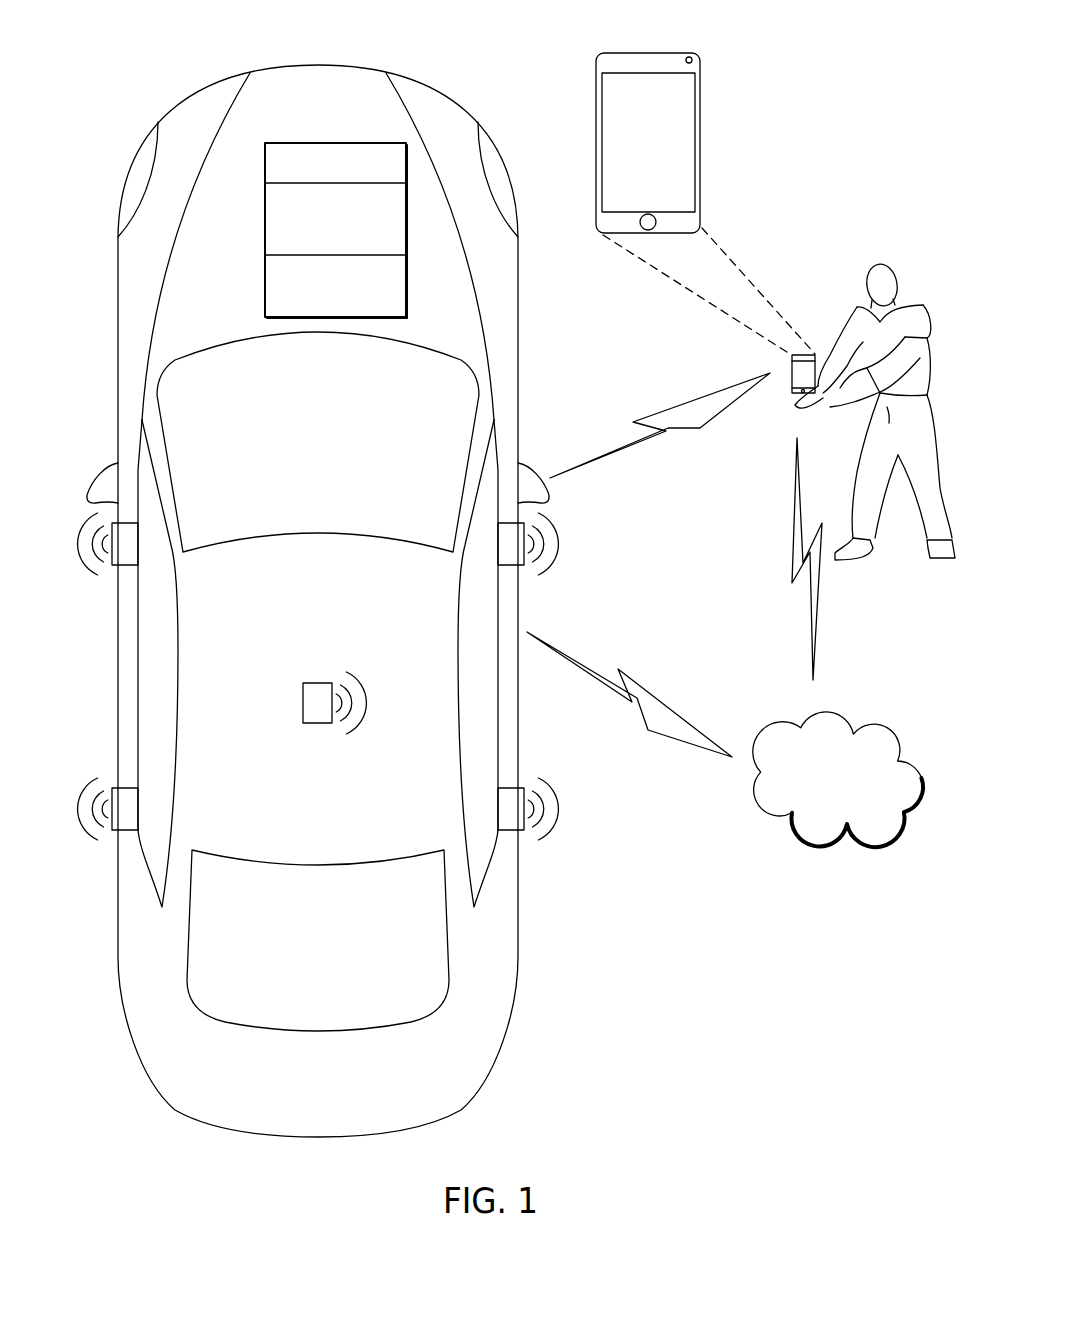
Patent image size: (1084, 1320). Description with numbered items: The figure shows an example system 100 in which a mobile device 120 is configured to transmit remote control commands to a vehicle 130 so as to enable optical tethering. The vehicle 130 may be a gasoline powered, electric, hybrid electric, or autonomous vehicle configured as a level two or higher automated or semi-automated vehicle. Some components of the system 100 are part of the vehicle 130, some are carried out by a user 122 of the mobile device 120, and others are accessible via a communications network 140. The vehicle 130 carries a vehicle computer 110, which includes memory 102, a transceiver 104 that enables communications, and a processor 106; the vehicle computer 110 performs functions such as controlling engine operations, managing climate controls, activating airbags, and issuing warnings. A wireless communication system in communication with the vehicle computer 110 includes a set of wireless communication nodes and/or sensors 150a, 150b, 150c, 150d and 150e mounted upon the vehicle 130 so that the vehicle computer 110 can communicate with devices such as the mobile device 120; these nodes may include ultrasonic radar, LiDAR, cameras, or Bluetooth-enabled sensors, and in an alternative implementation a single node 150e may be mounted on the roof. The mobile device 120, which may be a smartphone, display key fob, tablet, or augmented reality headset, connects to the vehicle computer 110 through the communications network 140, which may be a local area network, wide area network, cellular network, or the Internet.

The system 100 is at (792, 63).
The vehicle 130 is at (150, 72).
The vehicle computer 110 is at (263, 232).
The memory 102 is at (335, 165).
The transceiver 104 is at (335, 225).
The processor 106 is at (336, 294).
The mobile device 120 is at (596, 145).
The user 122 is at (866, 276).
The communications network 140 is at (847, 727).
The wireless communication node 150a is at (110, 566).
The wireless communication node 150b is at (110, 831).
The wireless communication node 150c is at (531, 566).
The wireless communication node 150d is at (531, 831).
The wireless communication node 150e is at (303, 703).